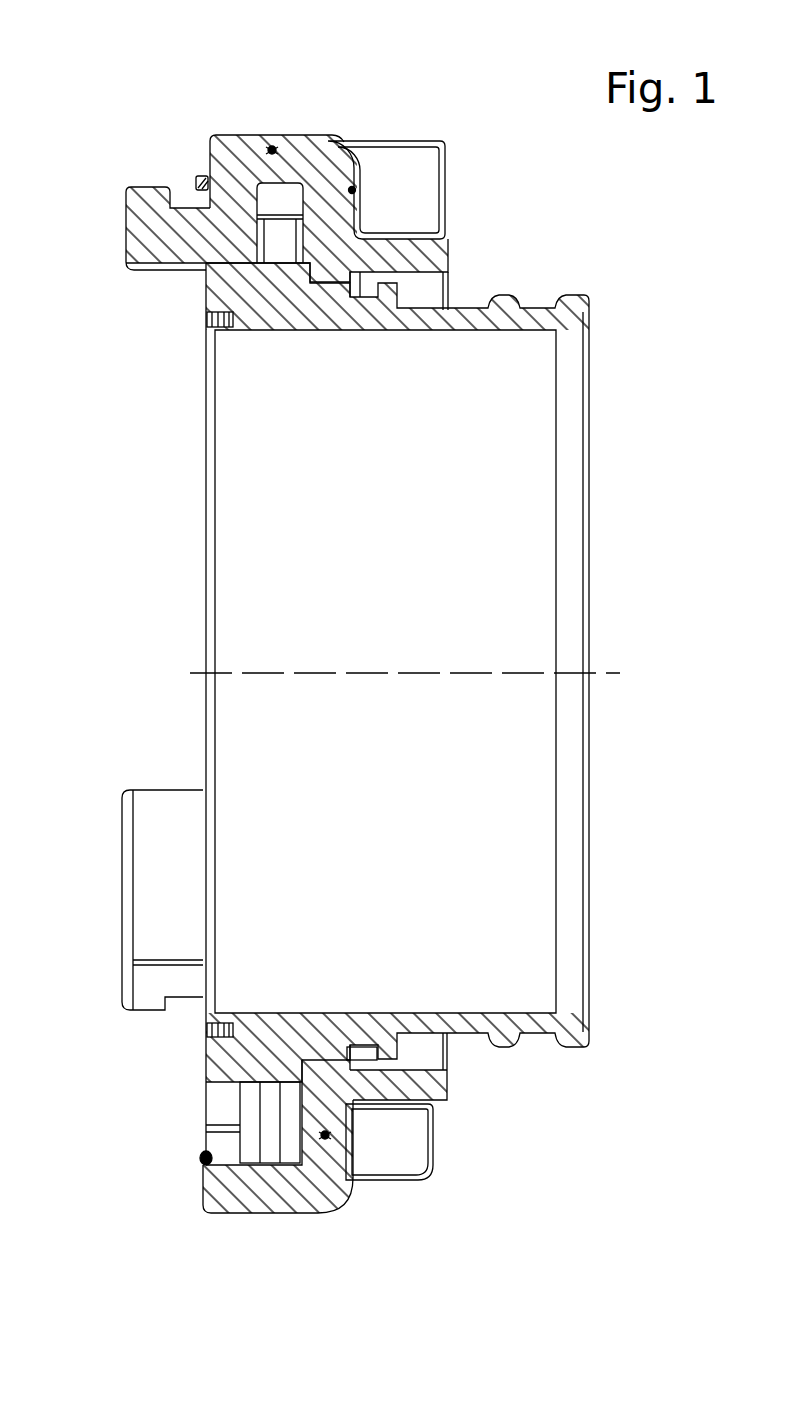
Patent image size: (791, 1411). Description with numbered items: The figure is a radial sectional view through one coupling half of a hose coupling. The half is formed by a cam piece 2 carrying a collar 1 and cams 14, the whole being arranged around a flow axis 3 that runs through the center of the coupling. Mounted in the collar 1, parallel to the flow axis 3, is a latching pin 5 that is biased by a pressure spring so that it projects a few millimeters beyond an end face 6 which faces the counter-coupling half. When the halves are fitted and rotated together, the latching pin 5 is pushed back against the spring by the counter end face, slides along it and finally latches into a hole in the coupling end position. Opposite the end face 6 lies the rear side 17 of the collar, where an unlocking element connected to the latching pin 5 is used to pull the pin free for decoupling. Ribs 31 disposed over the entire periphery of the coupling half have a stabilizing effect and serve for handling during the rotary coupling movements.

The collar 1 is at (273, 148).
The cam piece 2 is at (318, 1198).
The flow axis 3 is at (493, 667).
The latching pin 5 is at (203, 185).
The end face 6 is at (203, 1163).
The cam 14 is at (125, 218).
The rear side of the collar 17 is at (353, 190).
The ribs 31 is at (400, 1145).